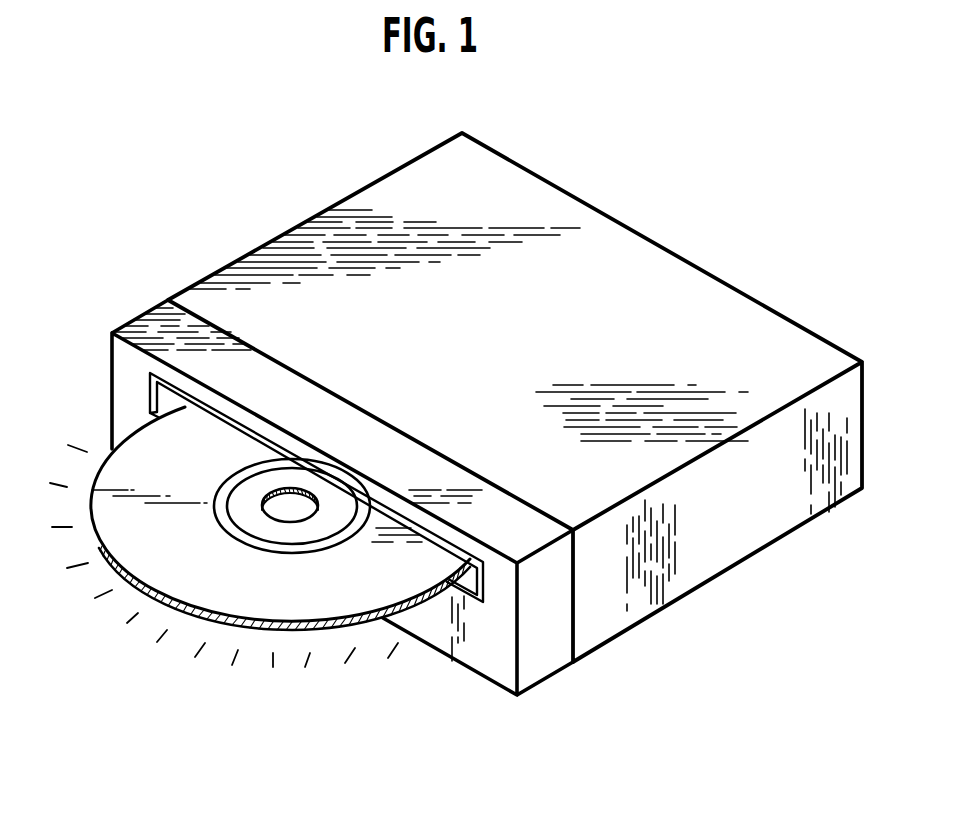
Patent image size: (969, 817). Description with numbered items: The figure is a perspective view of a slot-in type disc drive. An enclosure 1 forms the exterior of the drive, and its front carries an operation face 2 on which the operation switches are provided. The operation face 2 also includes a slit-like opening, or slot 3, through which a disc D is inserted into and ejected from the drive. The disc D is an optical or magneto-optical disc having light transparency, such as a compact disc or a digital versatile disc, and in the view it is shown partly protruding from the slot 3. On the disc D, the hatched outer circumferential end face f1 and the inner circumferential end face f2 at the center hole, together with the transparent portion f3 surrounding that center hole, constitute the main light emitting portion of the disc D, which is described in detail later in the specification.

The enclosure 1 is at (597, 223).
The operation face 2 is at (487, 660).
The slit-like opening (slot) 3 is at (157, 402).
The disc D is at (260, 564).
The outer circumferential end face f1 is at (287, 633).
The inner circumferential end face f2 is at (288, 490).
The transparent portion f3 is at (335, 513).